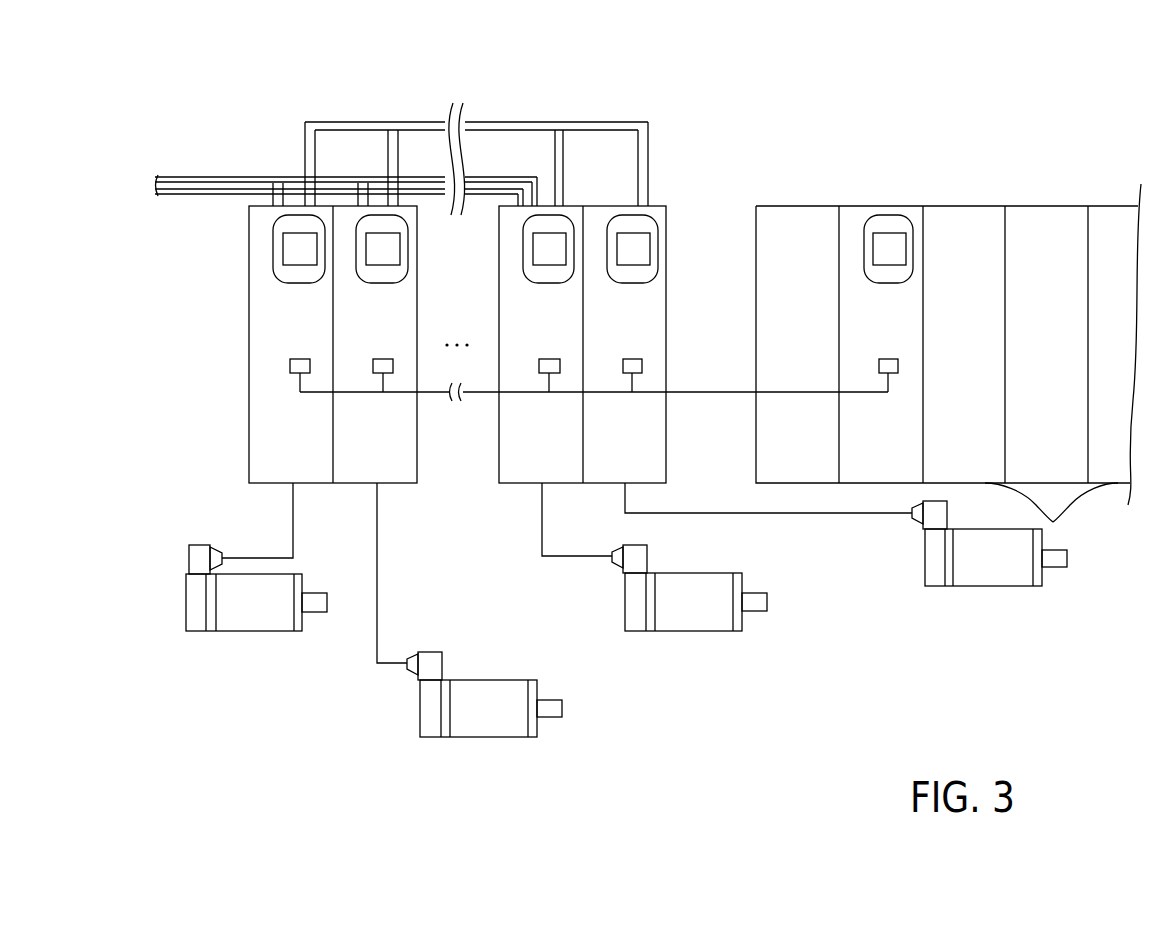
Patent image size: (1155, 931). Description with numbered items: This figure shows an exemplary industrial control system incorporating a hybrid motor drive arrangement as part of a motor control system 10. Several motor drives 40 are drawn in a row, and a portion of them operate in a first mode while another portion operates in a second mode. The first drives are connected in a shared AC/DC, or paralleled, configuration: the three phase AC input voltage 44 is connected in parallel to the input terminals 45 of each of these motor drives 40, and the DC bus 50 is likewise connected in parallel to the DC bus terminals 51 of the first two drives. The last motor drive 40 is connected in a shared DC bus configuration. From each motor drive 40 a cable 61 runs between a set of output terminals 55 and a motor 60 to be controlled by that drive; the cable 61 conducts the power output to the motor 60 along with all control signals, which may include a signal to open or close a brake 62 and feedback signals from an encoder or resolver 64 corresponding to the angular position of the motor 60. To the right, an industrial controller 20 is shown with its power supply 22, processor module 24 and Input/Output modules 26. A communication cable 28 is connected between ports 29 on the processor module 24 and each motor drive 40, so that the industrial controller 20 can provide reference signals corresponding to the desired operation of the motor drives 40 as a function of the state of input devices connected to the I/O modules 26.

The motor control system 10 is at (900, 115).
The industrial controller 20 is at (1010, 180).
The power supply 22 is at (798, 206).
The processor module 24 is at (881, 206).
The Input/Output (I/O) modules 26 is at (1051, 518).
The communication cable 28 is at (697, 392).
The ports 29 is at (314, 366).
The motor drive 40 is at (249, 347).
The AC input voltage 44 is at (207, 200).
The input terminals 45 is at (267, 213).
The DC bus 50 is at (603, 108).
The DC bus terminals 51 is at (404, 200).
The output terminals 55 is at (287, 492).
The motor 60 is at (260, 612).
The cable 61 is at (375, 521).
The brake 62 is at (203, 614).
The encoder or resolver 64 is at (212, 615).